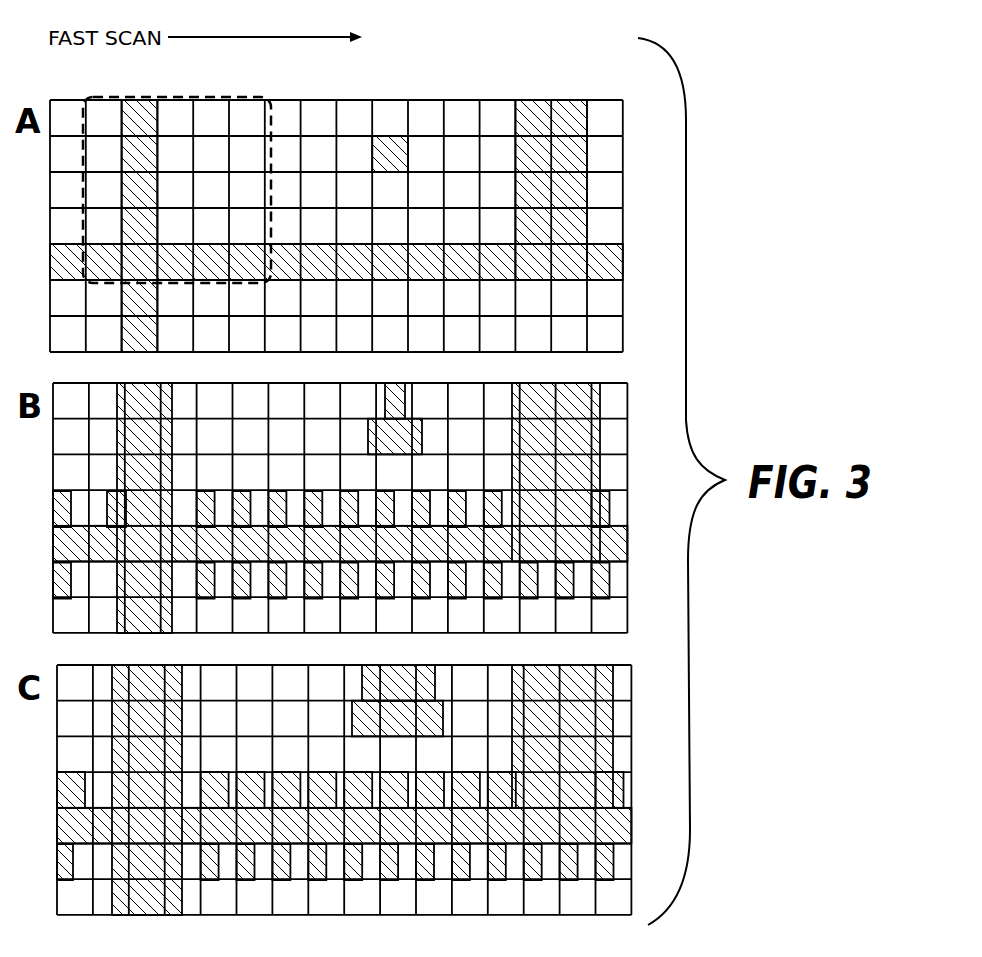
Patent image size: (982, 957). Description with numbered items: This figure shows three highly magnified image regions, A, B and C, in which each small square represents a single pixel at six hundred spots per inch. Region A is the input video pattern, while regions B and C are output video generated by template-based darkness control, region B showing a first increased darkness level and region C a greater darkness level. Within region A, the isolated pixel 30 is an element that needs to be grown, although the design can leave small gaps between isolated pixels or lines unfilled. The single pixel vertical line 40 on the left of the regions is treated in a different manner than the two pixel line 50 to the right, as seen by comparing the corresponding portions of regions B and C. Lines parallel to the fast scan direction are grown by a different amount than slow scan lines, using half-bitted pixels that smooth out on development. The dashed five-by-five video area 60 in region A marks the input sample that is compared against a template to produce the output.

The isolated pixel 30 is at (390, 147).
The single pixel vertical line 40 is at (137, 96).
The two pixel line 50 is at (588, 96).
The 5×5 video area 60 is at (218, 93).